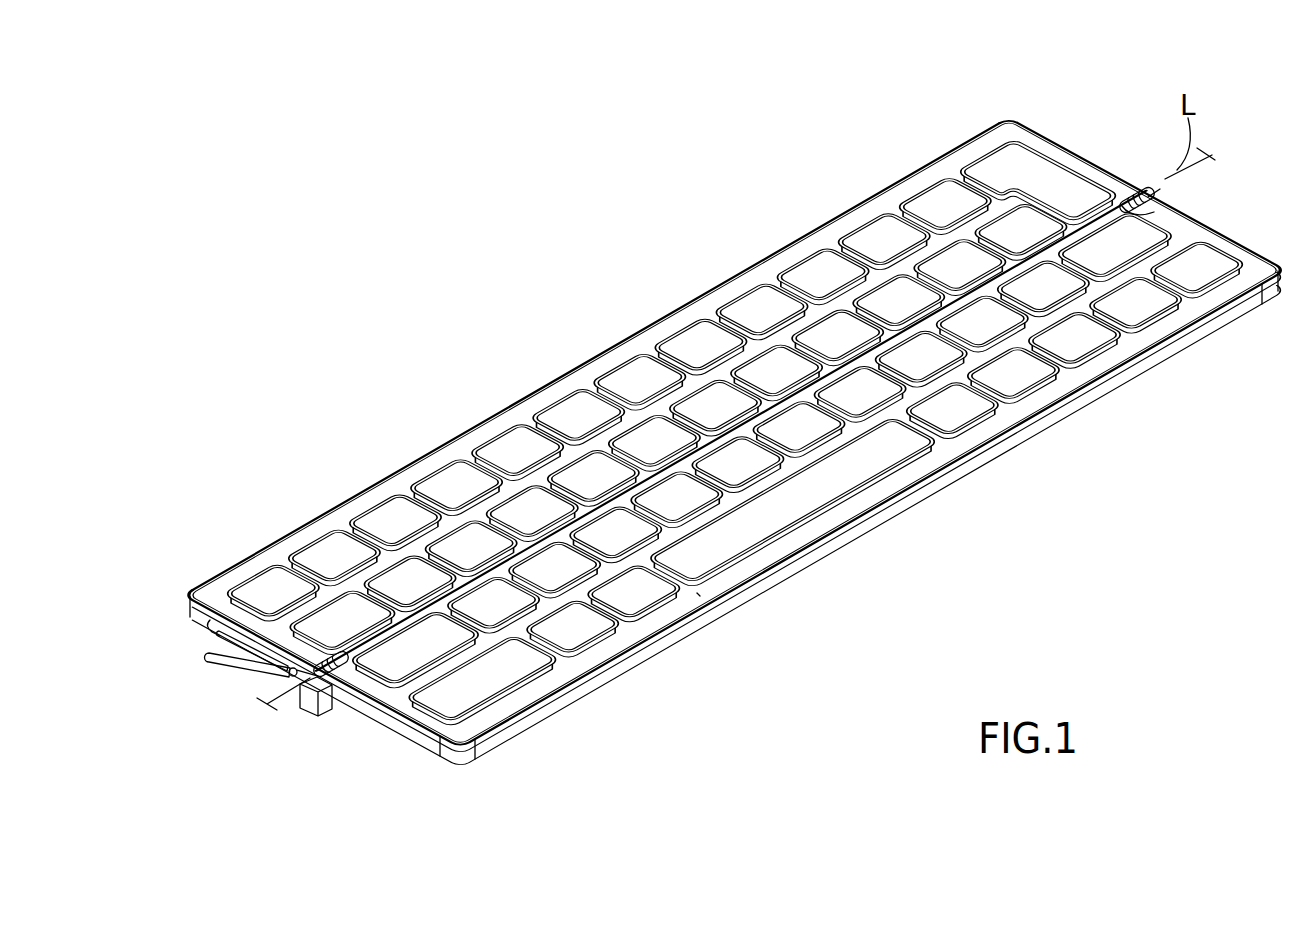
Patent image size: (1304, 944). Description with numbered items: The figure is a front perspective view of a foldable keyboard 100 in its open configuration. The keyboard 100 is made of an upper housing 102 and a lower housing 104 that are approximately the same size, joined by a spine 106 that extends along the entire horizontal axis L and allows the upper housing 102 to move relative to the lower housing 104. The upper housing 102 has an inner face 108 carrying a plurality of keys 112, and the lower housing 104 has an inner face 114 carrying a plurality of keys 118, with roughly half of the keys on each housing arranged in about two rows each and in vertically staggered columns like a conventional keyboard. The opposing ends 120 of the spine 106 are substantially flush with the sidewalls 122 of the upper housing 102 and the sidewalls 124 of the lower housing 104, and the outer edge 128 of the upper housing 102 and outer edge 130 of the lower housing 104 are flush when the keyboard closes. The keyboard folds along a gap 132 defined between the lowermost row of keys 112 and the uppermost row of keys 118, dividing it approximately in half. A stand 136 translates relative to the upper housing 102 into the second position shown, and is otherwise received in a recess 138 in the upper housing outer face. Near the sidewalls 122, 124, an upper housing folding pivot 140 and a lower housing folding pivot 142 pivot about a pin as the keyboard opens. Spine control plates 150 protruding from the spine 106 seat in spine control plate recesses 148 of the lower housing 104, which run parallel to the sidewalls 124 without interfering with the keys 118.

The foldable keyboard 100 is at (734, 433).
The upper housing 102 is at (663, 393).
The lower housing 104 is at (802, 469).
The spine 106 is at (738, 455).
The inner face 108 is at (1038, 186).
The keys 112 is at (457, 487).
The inner face 114 is at (694, 591).
The keys 118 is at (573, 629).
The opposing ends 120 is at (318, 702).
The sidewalls 122 is at (218, 620).
The sidewalls 124 is at (738, 442).
The outer edge 128 is at (596, 356).
The outer edge 130 is at (793, 502).
The gap 132 is at (310, 678).
The stand 136 is at (222, 660).
The recess 138 is at (224, 637).
The upper housing folding pivot 140 is at (1150, 193).
The lower housing folding pivot 142 is at (1150, 211).
The spine control plate recesses 148 is at (318, 676).
The spine control plates 150 is at (320, 655).